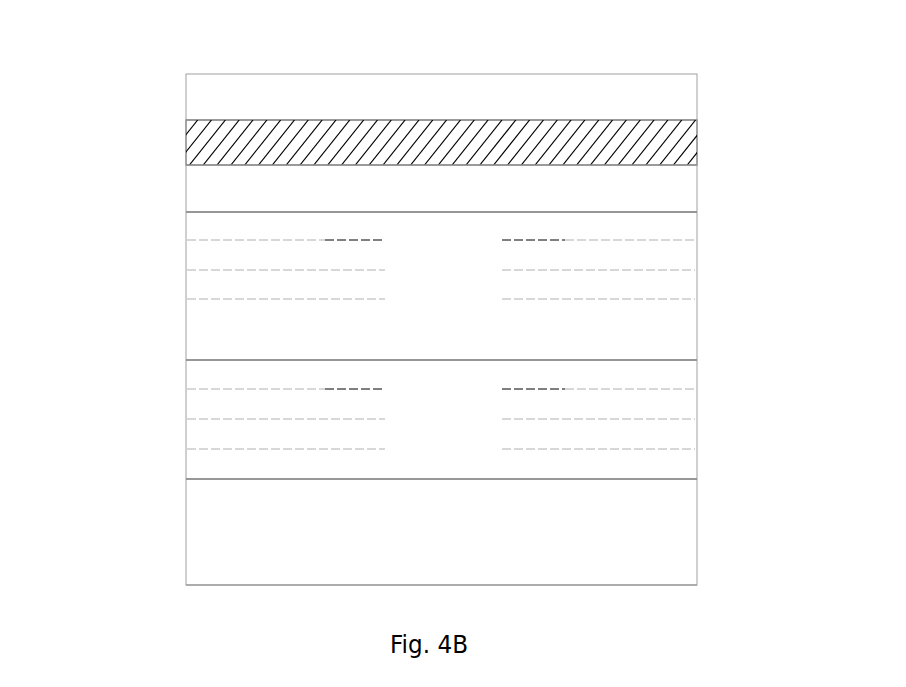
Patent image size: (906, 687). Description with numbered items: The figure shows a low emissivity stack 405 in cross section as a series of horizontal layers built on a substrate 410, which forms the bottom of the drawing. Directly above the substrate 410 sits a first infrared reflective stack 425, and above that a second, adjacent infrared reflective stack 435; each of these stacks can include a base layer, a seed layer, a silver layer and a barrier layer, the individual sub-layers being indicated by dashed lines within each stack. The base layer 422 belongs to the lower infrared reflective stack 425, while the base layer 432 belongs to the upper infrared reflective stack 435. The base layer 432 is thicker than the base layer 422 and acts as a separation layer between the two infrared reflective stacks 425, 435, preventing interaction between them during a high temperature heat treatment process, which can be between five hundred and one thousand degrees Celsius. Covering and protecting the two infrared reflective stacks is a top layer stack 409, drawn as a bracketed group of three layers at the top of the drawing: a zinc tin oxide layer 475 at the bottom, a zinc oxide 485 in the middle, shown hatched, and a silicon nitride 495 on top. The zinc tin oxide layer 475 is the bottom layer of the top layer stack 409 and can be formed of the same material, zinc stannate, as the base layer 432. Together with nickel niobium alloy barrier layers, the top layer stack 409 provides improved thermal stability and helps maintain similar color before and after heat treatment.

The low emissivity stack 405 is at (88, 150).
The top layer stack 409 is at (712, 74).
The substrate 410 is at (462, 543).
The base layer 422 is at (212, 465).
The infrared reflective stack 425 is at (400, 419).
The base layer 432 is at (217, 330).
The infrared reflective stack 435 is at (401, 286).
The zinc tin oxide layer 475 is at (420, 200).
The zinc oxide 485 is at (187, 150).
The silicon nitride 495 is at (420, 110).